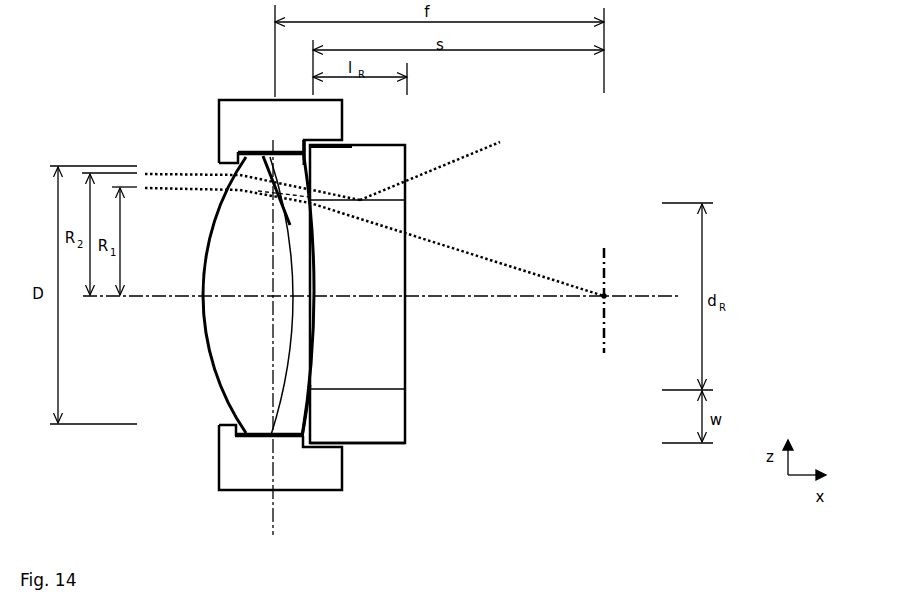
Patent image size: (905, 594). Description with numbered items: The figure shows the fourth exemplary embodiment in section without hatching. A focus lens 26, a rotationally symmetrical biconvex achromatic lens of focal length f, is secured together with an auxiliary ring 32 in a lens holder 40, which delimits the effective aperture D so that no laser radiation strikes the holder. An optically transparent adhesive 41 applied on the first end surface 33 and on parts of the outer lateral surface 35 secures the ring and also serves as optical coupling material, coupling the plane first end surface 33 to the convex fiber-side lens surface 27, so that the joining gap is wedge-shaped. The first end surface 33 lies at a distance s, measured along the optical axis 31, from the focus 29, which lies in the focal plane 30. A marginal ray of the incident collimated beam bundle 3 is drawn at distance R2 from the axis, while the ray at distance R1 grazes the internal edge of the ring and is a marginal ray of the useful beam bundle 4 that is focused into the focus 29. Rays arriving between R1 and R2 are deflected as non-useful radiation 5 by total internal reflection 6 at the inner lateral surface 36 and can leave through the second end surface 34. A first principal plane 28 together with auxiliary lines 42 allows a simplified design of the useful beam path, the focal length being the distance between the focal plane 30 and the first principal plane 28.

The incident collimated beam bundle 3 is at (186, 154).
The useful beam bundle 4 is at (422, 243).
The non-useful radiation 5 is at (451, 171).
The total internal reflection 6 is at (335, 201).
The focus lens 26 is at (218, 294).
The fiber-side lens surface 27 is at (334, 288).
The first principal plane 28 is at (309, 339).
The focus 29 is at (569, 319).
The focal plane 30 is at (639, 300).
The optical axis 31 is at (380, 271).
The auxiliary ring 32 is at (330, 457).
The first end surface 33 is at (240, 411).
The second end surface 34 is at (386, 294).
The outer lateral surface 35 is at (372, 471).
The inner lateral surface 36 is at (381, 294).
The lens holder 40 is at (280, 113).
The optically transparent adhesive 41 is at (348, 139).
The auxiliary lines 42 is at (240, 206).